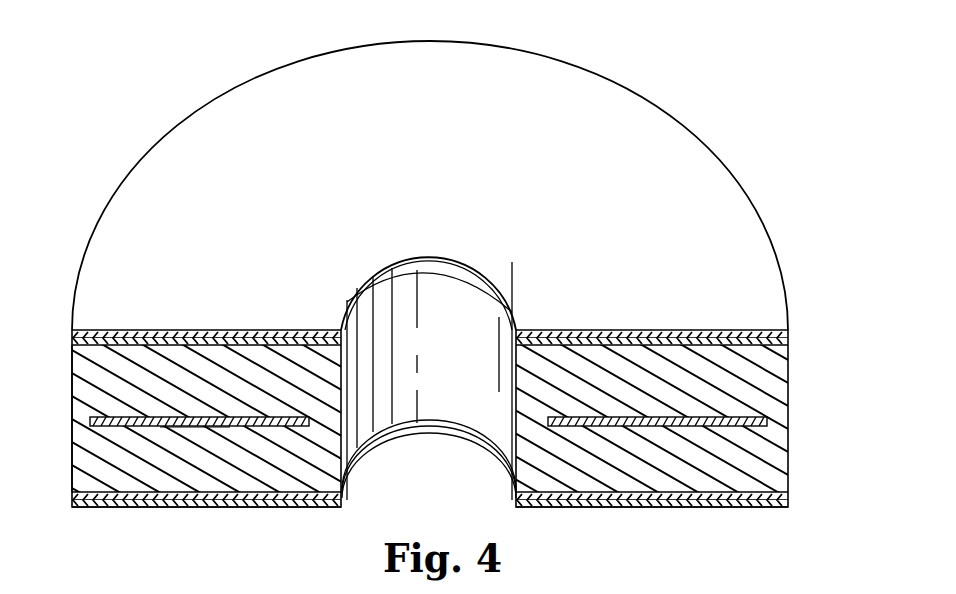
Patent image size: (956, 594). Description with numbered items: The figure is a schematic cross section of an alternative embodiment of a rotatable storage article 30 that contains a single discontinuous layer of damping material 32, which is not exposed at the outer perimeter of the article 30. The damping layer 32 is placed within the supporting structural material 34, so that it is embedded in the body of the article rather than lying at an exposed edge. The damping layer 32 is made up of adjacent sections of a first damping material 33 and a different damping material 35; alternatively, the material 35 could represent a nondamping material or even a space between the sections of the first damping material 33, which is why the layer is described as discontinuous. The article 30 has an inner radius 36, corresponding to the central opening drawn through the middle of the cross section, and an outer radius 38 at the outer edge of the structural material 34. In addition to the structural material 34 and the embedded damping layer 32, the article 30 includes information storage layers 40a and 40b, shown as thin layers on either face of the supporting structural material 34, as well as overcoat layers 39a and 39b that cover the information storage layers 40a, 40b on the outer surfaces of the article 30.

The rotatable storage article 30 is at (722, 133).
The damping layer 32 is at (745, 410).
The first damping material 33 is at (107, 427).
The supporting structural material 34 is at (103, 382).
The different damping material 35 is at (222, 427).
The inner radius 36 is at (447, 405).
The outer radius 38 is at (72, 455).
The overcoat layer 39a is at (653, 140).
The overcoat layer 39b is at (278, 507).
The information storage layer 40a is at (789, 340).
The information storage layer 40b is at (782, 497).